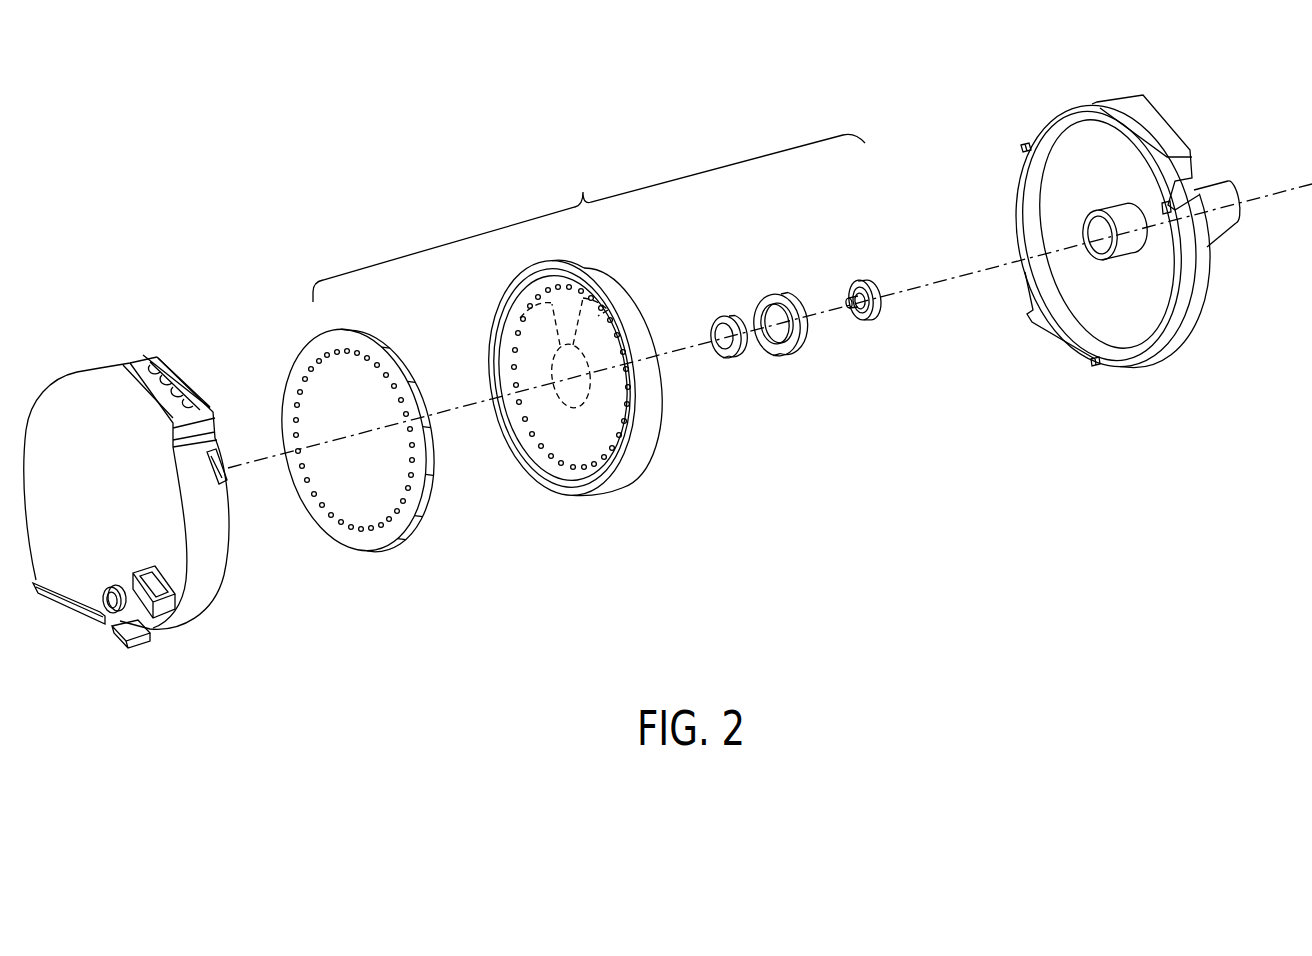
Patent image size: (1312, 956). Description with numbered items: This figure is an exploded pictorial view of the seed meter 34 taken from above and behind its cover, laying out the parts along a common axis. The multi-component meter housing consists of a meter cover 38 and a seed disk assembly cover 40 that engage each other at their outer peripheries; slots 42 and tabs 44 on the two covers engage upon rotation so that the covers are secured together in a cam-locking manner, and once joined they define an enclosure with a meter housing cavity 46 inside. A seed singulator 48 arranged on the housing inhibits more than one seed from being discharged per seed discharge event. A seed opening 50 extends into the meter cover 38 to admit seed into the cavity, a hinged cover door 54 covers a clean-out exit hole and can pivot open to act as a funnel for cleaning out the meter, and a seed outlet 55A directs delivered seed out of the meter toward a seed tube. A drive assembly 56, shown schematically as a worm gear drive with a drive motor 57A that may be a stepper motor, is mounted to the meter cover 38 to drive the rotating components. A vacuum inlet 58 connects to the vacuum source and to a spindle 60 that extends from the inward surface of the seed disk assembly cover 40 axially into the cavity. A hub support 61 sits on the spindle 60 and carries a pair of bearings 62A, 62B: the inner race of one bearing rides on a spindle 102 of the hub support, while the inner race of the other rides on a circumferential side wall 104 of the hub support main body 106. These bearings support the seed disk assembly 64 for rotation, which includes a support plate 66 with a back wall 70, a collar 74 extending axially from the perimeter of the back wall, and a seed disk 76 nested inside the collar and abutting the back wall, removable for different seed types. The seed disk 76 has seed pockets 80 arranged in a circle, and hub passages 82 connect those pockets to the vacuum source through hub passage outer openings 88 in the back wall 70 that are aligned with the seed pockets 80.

The seed meter 34 is at (906, 142).
The meter cover 38 is at (50, 372).
The seed disk assembly cover 40 is at (1123, 254).
The slots 42 is at (226, 468).
The tabs 44 is at (1022, 146).
The meter housing cavity 46 is at (1105, 316).
The seed singulator 48 is at (176, 370).
The seed opening 50 is at (160, 583).
The hinged cover door 54 is at (140, 646).
The seed outlet 55A is at (63, 612).
The drive assembly 56 is at (1239, 195).
The drive motor 57A is at (1226, 235).
The vacuum inlet 58 is at (573, 408).
The spindle 60 is at (1123, 254).
The hub support 61 is at (870, 303).
The bearings 62A is at (720, 316).
The bearings 62B is at (772, 294).
The seed disk assembly 64 is at (589, 218).
The support plate 66 is at (565, 399).
The back wall 70 is at (598, 478).
The collar 74 is at (648, 441).
The seed disk 76 is at (367, 460).
The seed pockets 80 is at (371, 530).
The hub passages 82 is at (609, 308).
The hub passage outer openings 88 is at (588, 466).
The spindle 102 is at (849, 306).
The circumferential side wall 104 is at (876, 291).
The main body 106 is at (870, 322).